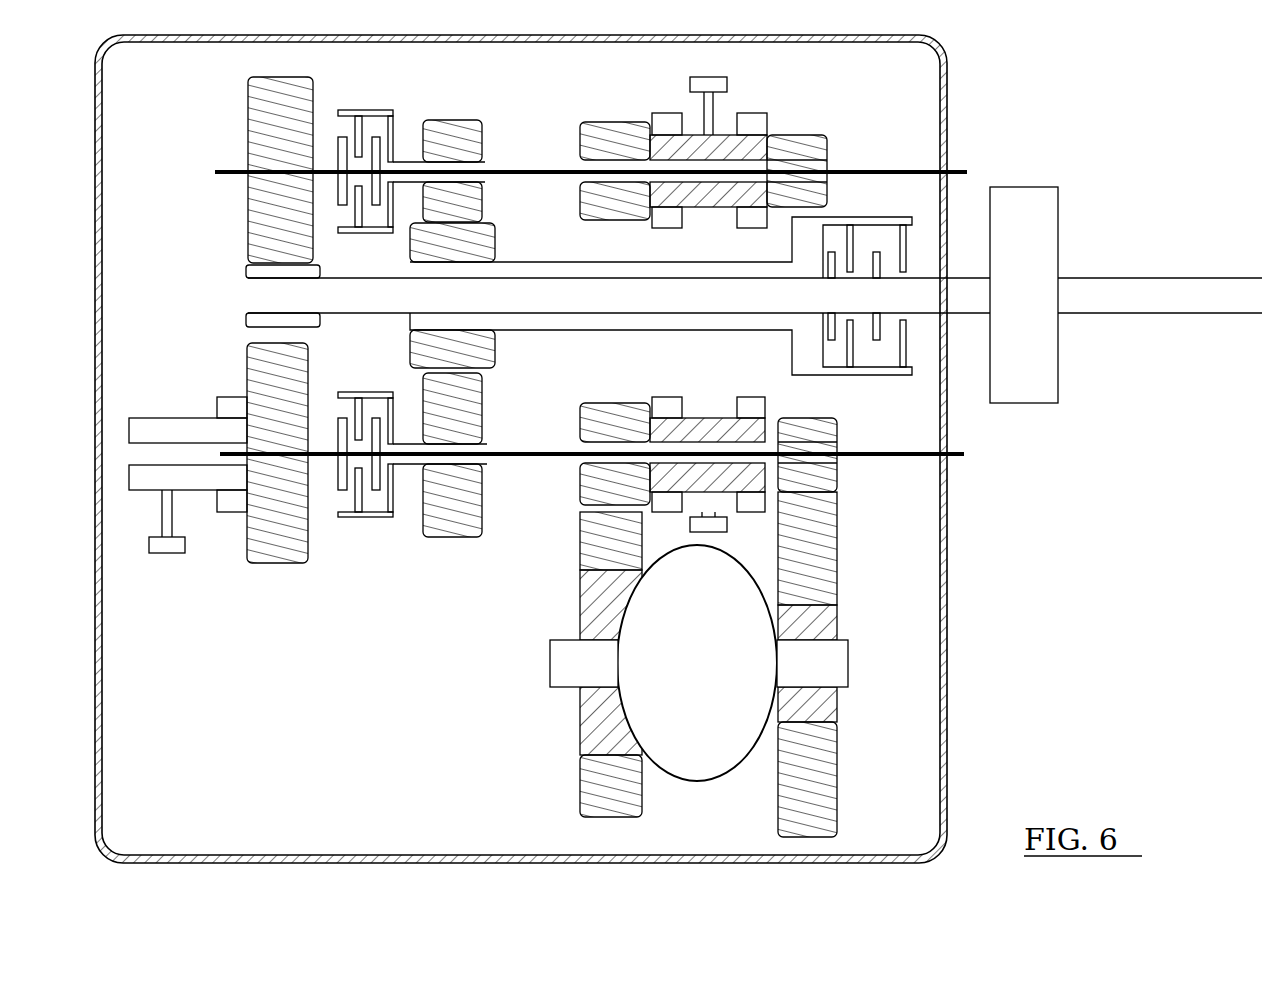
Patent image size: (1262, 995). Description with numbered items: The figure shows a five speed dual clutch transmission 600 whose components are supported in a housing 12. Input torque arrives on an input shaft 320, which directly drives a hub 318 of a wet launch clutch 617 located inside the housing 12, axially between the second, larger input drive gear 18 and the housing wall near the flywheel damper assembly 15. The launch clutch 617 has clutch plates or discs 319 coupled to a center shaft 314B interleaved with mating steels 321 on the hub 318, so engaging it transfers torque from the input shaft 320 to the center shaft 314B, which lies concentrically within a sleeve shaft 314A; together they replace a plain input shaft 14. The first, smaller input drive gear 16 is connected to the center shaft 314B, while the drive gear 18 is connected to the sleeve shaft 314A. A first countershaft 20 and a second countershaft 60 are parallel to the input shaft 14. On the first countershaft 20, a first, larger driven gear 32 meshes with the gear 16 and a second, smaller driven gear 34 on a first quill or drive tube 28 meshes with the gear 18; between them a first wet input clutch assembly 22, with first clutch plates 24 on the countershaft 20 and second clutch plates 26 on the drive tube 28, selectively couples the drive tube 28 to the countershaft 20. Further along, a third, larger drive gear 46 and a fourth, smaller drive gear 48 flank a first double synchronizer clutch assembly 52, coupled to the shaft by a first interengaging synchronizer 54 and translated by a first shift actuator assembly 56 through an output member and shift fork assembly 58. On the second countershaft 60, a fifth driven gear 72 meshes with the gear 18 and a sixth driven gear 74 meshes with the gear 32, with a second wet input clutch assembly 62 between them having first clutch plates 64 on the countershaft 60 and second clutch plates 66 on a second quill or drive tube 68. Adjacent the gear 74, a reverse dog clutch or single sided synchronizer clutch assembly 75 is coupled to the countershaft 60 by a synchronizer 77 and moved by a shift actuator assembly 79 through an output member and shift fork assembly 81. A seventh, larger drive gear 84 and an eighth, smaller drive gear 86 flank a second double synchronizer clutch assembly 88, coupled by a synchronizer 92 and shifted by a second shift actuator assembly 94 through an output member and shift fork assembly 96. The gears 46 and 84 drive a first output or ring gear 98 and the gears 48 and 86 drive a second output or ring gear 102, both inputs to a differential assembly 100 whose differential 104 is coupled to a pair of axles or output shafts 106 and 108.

The housing 12 is at (950, 65).
The five speed dual clutch transmission 600 is at (1052, 96).
The input shaft 14 is at (605, 278).
The first, smaller input drive gear 16 is at (245, 272).
The flywheel damper assembly 15 is at (1040, 187).
The input shaft 320 is at (1175, 278).
The first layshaft or countershaft 20 is at (903, 168).
The first, larger driven gear 32 is at (250, 92).
The first wet input clutch assembly 22 is at (410, 147).
The second plurality of clutch plates or discs 26 is at (358, 135).
The first plurality of clutch plates or discs 24 is at (382, 143).
The second, smaller driven gear 34 is at (462, 120).
The first quill or drive tube 28 is at (466, 158).
The center shaft 314B is at (545, 262).
The sleeve shaft 314A is at (550, 333).
The second, larger input drive gear 18 is at (495, 356).
The third, larger drive gear 46 is at (597, 122).
The first double synchronizer clutch assembly 52 is at (745, 154).
The first interengaging synchronizer 54 is at (712, 180).
The first shift actuator assembly 56 is at (688, 80).
The output member and shift fork assembly 58 is at (700, 112).
The fourth, smaller drive gear 48 is at (812, 135).
The hub 318 is at (922, 313).
The mating steels 321 is at (858, 240).
The clutch plates or discs 319 is at (858, 345).
The wet launch clutch 617 is at (906, 200).
The second layshaft or countershaft 60 is at (882, 462).
The synchronizer 77 is at (232, 450).
The output member and shift fork assembly 81 is at (177, 530).
The shift actuator assembly 79 is at (163, 566).
The reverse dog clutch or single sided synchronizer clutch assembly 75 is at (148, 505).
The sixth, driven gear 74 is at (248, 550).
The second wet input clutch assembly 62 is at (398, 495).
The second plurality of clutch plates or discs 66 is at (370, 503).
The first plurality of clutch plates or discs 64 is at (340, 478).
The second quill or drive tube 68 is at (406, 440).
The fifth, driven gear 72 is at (440, 540).
The seventh, larger drive gear 84 is at (610, 403).
The second double synchronizer clutch assembly 88 is at (716, 426).
The synchronizer 92 is at (690, 440).
The output member and shift fork assembly 96 is at (690, 522).
The second shift actuator assembly 94 is at (746, 528).
The eighth, smaller drive gear 86 is at (822, 420).
The first output or ring gear 98 is at (580, 720).
The second output or ring gear 102 is at (840, 715).
The differential assembly 100 is at (738, 770).
The differential 104 is at (680, 782).
The axle or output shaft 106 is at (550, 663).
The axle or output shaft 108 is at (848, 663).